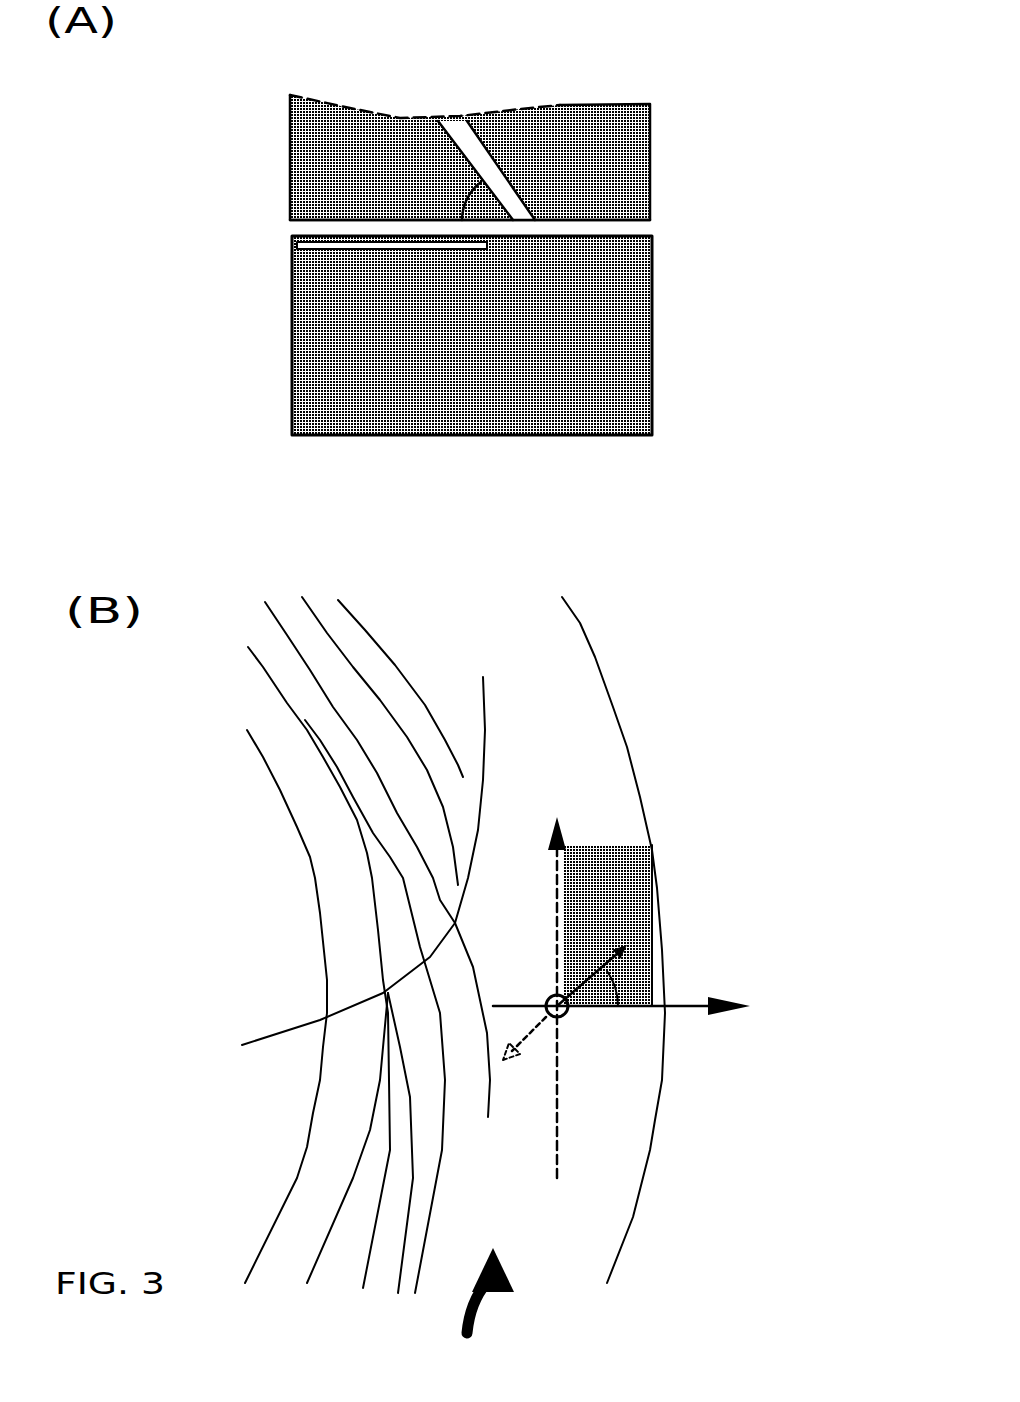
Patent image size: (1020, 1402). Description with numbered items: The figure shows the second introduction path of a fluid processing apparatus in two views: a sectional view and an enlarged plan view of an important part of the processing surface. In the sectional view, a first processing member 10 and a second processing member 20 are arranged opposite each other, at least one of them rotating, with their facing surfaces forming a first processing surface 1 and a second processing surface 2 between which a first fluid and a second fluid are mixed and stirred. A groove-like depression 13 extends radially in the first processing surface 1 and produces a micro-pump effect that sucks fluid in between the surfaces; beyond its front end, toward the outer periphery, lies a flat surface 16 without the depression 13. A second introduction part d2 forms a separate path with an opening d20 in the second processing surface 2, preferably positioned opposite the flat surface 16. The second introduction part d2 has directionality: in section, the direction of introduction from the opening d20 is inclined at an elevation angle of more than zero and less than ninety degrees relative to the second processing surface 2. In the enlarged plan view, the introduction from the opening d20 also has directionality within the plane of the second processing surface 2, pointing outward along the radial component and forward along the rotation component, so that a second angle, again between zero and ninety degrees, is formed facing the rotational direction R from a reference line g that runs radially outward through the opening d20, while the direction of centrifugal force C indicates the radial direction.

The first processing surface 1 is at (652, 707).
The second processing surface 2 is at (429, 191).
The first processing member 10 is at (419, 335).
The groove-like depression 13 is at (337, 767).
The flat surface 16 is at (341, 874).
The second processing member 20 is at (419, 157).
The second introduction part d2 is at (489, 110).
The opening of the second introduction part d20 is at (641, 589).
The direction of centrifugal force C is at (642, 1009).
The reference line g is at (706, 968).
The rotational direction R is at (506, 1290).